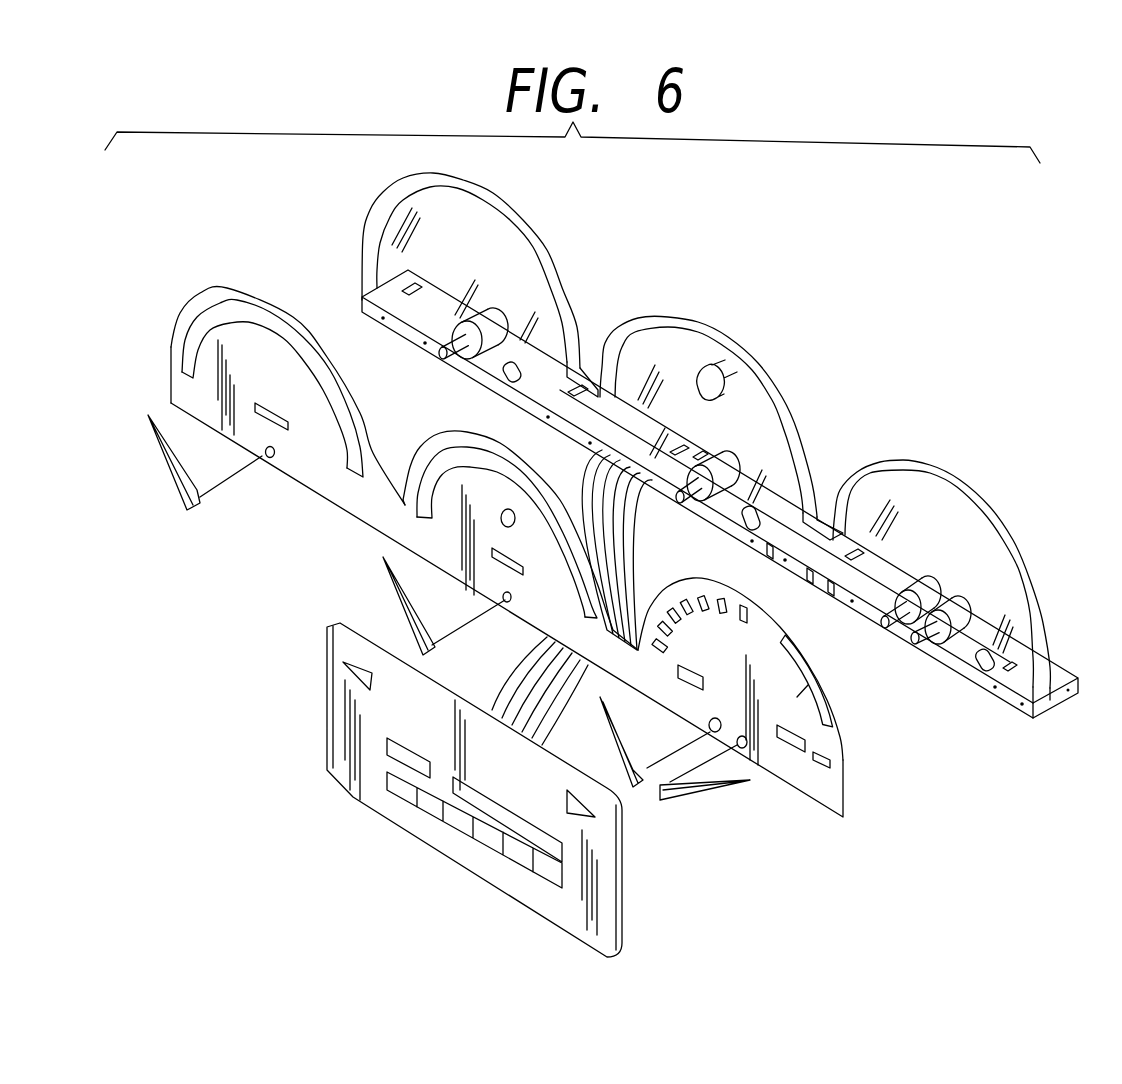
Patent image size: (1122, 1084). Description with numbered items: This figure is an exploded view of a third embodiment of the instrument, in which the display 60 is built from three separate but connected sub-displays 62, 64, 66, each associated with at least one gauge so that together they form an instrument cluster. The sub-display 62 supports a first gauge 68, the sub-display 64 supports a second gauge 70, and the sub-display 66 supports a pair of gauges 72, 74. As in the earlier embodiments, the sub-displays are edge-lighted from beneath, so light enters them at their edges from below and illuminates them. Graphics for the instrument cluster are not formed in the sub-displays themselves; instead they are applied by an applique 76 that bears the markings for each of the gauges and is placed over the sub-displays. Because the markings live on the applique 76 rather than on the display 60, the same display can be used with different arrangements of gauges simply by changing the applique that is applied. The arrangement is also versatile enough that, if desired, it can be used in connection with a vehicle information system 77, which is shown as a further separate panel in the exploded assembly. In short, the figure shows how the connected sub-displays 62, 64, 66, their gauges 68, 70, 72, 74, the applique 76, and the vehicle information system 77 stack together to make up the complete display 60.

The display 60 is at (742, 299).
The sub-display 62 is at (470, 222).
The sub-display 64 is at (743, 390).
The sub-display 66 is at (960, 520).
The first gauge 68 is at (497, 322).
The second gauge 70 is at (733, 458).
The gauge 72 is at (930, 572).
The gauge 74 is at (987, 606).
The applique 76 is at (262, 352).
The vehicle information system 77 is at (608, 862).